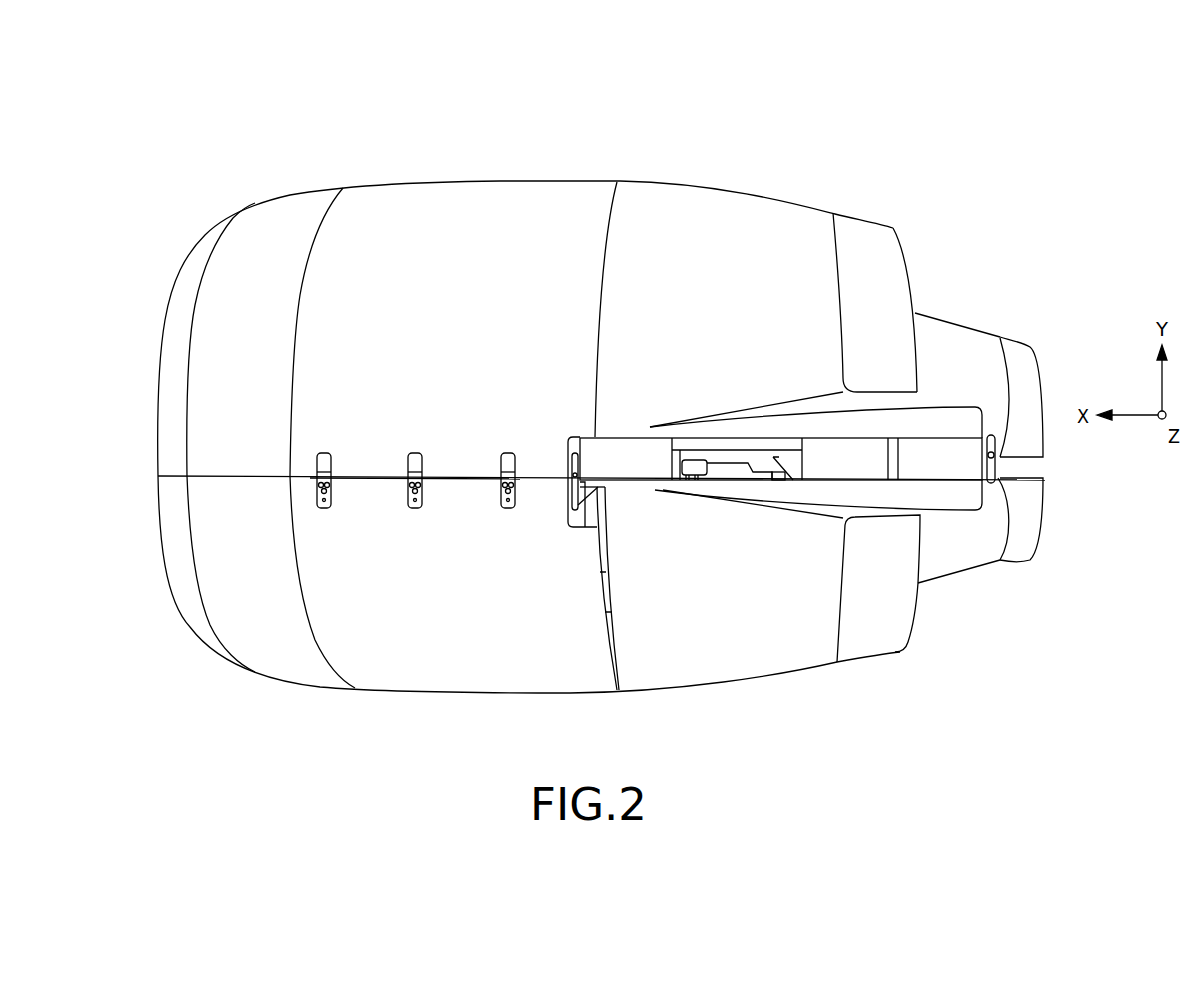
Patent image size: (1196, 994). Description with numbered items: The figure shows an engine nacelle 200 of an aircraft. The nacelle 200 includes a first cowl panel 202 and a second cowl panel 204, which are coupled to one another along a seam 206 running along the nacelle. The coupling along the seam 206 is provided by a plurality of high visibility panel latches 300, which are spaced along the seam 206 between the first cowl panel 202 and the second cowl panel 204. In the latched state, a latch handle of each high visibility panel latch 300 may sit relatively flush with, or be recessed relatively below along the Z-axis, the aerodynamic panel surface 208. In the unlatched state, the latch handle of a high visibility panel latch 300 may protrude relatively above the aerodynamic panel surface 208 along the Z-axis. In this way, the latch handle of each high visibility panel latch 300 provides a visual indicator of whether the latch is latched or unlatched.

The nacelle 200 is at (972, 125).
The first cowl panel 202 is at (495, 197).
The second cowl panel 204 is at (563, 683).
The seam 206 is at (462, 481).
The aerodynamic panel surface 208 is at (420, 392).
The high visibility panel latch 300 is at (325, 455).